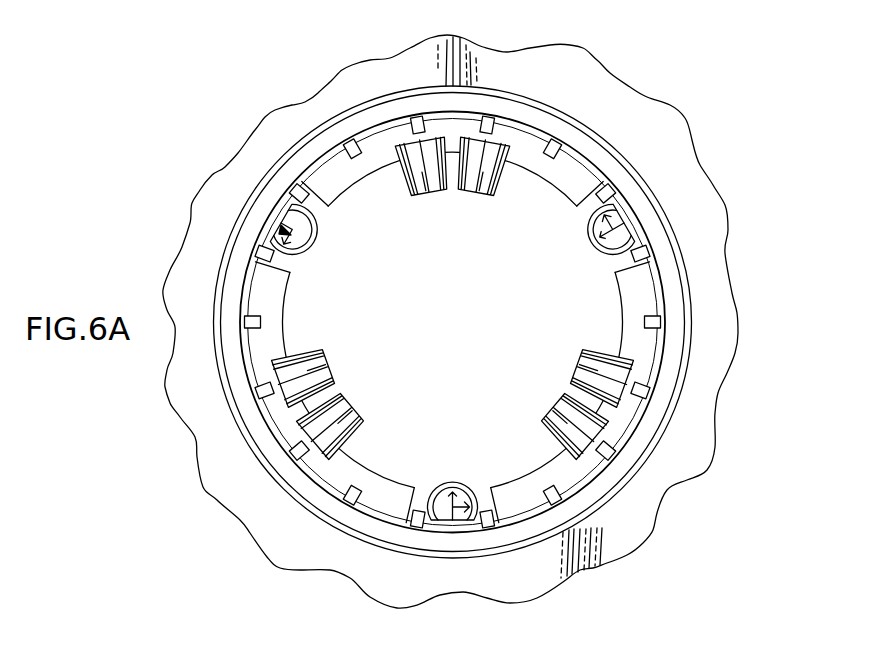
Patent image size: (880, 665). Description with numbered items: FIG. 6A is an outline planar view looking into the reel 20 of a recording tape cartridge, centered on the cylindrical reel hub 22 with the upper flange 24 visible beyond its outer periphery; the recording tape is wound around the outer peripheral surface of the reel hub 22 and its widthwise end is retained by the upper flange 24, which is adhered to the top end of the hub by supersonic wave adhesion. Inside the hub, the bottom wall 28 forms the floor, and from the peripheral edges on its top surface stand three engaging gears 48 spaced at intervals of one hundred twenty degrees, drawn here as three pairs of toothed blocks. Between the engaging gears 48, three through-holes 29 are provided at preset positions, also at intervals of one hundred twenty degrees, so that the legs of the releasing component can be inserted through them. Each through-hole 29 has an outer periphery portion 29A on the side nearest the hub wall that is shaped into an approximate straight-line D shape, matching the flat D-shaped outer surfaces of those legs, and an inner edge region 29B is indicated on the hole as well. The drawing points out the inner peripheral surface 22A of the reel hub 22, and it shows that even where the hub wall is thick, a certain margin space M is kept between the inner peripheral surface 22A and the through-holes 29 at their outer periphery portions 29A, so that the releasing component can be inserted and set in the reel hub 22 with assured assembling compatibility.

The reel 20 is at (454, 330).
The reel hub 22 is at (543, 88).
The inner peripheral surface of the reel hub 22A is at (262, 357).
The upper flange 24 is at (708, 212).
The bottom wall 28 is at (580, 307).
The through-holes 29 is at (277, 216).
The outer periphery portions of the through-holes 29A is at (262, 230).
The inner edge of hole 29B is at (298, 251).
The engaging gears 48 is at (475, 191).
The margin space M is at (256, 211).